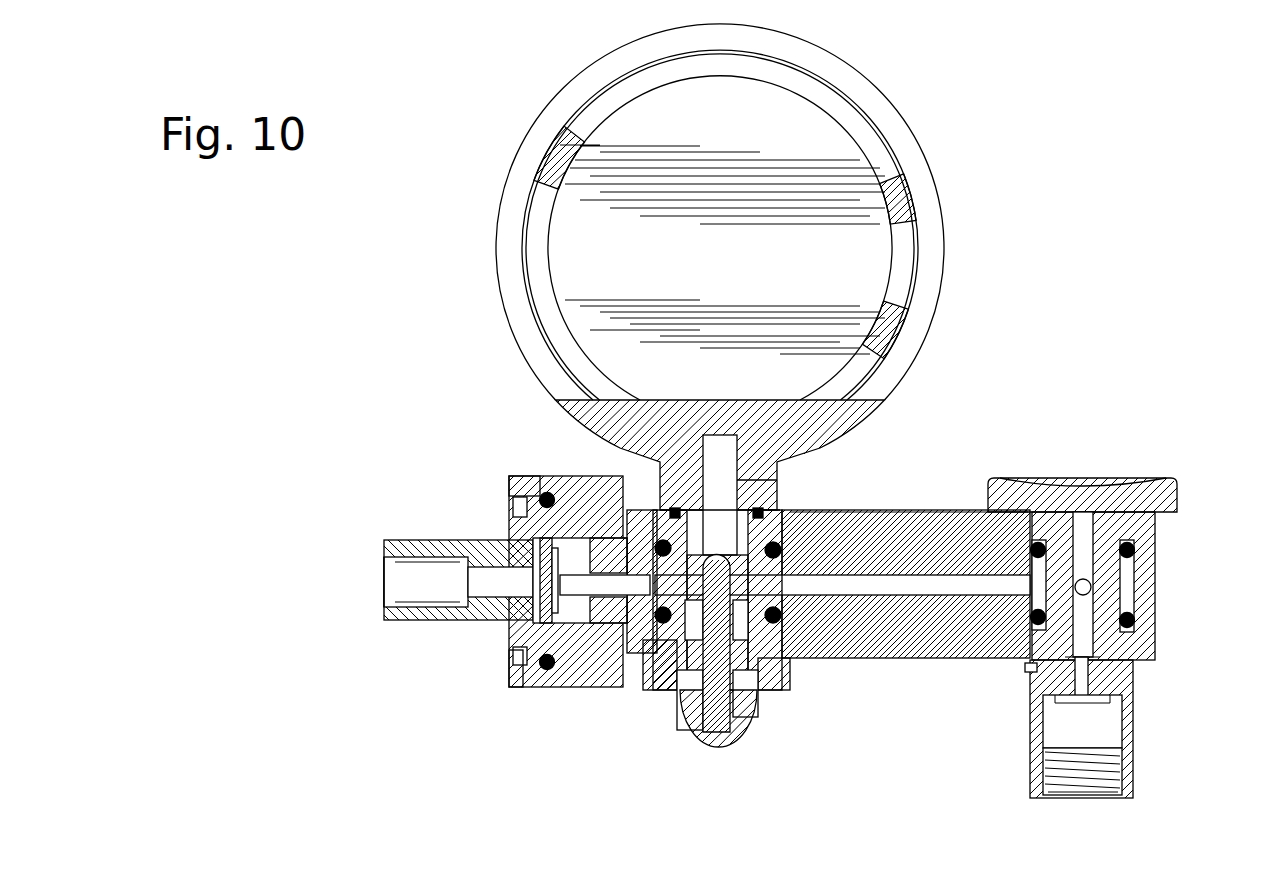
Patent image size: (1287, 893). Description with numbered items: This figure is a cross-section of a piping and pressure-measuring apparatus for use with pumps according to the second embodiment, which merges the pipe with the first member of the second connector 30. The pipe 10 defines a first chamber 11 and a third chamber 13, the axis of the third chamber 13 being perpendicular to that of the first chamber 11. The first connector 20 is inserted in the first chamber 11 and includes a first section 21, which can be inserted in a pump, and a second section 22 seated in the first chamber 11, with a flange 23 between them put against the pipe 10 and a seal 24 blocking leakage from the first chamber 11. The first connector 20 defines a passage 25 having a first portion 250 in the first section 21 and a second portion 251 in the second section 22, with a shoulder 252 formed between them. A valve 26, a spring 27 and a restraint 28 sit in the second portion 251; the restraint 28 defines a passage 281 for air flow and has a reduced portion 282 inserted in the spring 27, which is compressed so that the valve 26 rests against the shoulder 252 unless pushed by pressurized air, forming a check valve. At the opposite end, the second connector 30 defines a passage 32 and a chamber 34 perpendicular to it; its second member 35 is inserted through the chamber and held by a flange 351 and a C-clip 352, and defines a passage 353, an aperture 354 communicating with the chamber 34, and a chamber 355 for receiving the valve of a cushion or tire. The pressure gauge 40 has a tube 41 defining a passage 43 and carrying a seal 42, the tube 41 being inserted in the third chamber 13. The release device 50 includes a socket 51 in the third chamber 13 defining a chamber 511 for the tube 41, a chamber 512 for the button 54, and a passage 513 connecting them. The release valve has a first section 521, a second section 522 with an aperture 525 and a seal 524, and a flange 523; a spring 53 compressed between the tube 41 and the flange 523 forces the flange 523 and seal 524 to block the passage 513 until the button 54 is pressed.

The pipe 10 is at (972, 497).
The first chamber 11 is at (605, 655).
The third chamber 13 is at (808, 510).
The first connector 20 is at (377, 632).
The first section 21 is at (397, 624).
The second section 22 is at (530, 690).
The flange 23 is at (513, 478).
The seal 24 is at (545, 492).
The passage 25 is at (433, 624).
The valve 26 is at (380, 565).
The spring 27 is at (508, 537).
The restraint 28 is at (508, 530).
The second connector 30 is at (1143, 468).
The passage 32 is at (945, 598).
The chamber 34 is at (1132, 575).
The second member 35 is at (1135, 620).
The pressure gauge 40 is at (905, 93).
The tube 41 is at (722, 458).
The seal 42 is at (770, 492).
The passage 43 is at (790, 440).
The release device 50 is at (714, 665).
The socket 51 is at (660, 645).
The spring 53 is at (650, 660).
The button 54 is at (706, 680).
The first portion 250 is at (478, 624).
The second portion 251 is at (508, 652).
The shoulder 252 is at (507, 665).
The passage 281 is at (468, 582).
The reduced portion 282 is at (417, 539).
The flange 351 is at (1160, 500).
The C-clip 352 is at (1037, 668).
The passage 353 is at (1080, 630).
The aperture 354 is at (1090, 587).
The chamber 355 is at (1120, 705).
The chamber 511 is at (660, 500).
The chamber 512 is at (740, 705).
The passage 513 is at (745, 665).
The first section 521 is at (778, 640).
The second section 522 is at (722, 695).
The flange 523 is at (690, 650).
The seal 524 is at (765, 690).
The aperture 525 is at (700, 705).